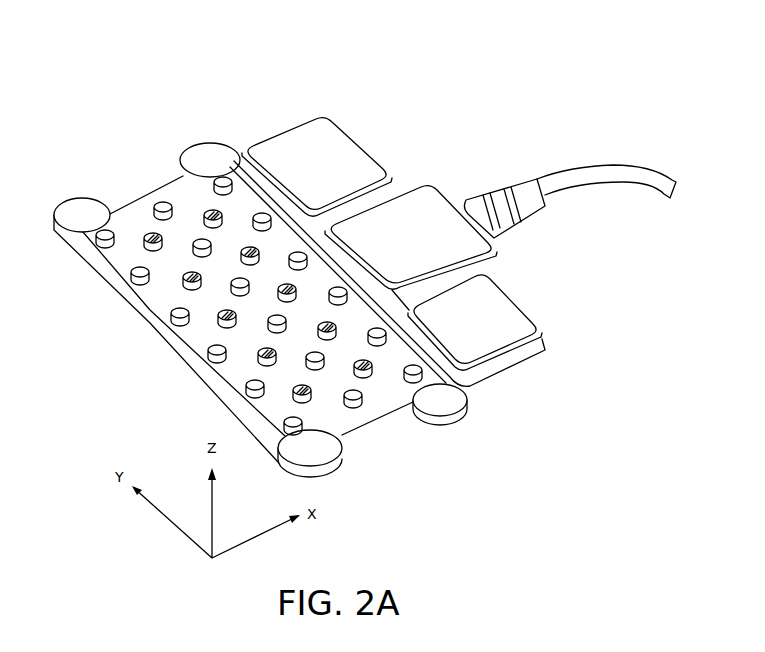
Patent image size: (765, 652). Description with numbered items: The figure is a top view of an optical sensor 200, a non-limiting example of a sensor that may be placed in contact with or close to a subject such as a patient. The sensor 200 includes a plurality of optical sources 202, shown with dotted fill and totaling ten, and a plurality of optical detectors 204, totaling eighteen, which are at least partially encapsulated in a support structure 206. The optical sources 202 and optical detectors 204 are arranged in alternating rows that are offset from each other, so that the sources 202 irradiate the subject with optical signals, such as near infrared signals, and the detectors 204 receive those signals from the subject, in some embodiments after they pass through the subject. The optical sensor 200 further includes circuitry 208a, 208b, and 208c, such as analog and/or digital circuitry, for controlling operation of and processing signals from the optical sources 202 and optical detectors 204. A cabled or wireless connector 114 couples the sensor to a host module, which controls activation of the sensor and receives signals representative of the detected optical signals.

The optical sensor 200 is at (365, 266).
The optical sources 202 is at (294, 394).
The optical detectors 204 is at (291, 431).
The support structure 206 is at (128, 211).
The circuitry 208a is at (298, 130).
The circuitry 208b is at (432, 193).
The circuitry 208c is at (518, 323).
The connector 114 is at (573, 167).